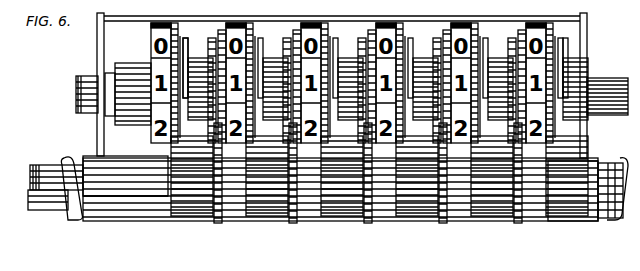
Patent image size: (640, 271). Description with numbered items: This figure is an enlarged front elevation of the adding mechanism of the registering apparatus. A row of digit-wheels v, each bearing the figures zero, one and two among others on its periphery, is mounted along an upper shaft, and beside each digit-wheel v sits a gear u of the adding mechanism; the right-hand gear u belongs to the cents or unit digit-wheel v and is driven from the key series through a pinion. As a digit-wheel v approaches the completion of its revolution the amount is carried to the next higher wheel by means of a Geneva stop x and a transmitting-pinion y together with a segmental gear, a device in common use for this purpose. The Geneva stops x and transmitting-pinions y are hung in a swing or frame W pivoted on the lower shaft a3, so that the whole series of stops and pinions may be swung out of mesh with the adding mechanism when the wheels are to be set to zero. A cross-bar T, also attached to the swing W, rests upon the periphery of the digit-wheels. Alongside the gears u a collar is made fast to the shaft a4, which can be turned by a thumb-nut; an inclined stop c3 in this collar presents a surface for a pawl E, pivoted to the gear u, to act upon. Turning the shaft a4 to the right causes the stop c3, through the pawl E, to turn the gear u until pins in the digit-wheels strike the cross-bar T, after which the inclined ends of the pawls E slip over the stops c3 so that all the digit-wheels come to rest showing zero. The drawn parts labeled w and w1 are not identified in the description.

The cross-bar T is at (342, 85).
The pawl E is at (251, 44).
The swing or frame W is at (82, 150).
The shaft a3 is at (36, 164).
The shaft a4 is at (594, 72).
The inclined stop c3 is at (630, 114).
The gear u is at (464, 24).
The digit wheel w is at (380, 24).
The digit wheel ring w1 is at (428, 24).
The digit-wheel v is at (534, 22).
The Geneva stop x is at (211, 215).
The transmitting-pinion y is at (186, 210).